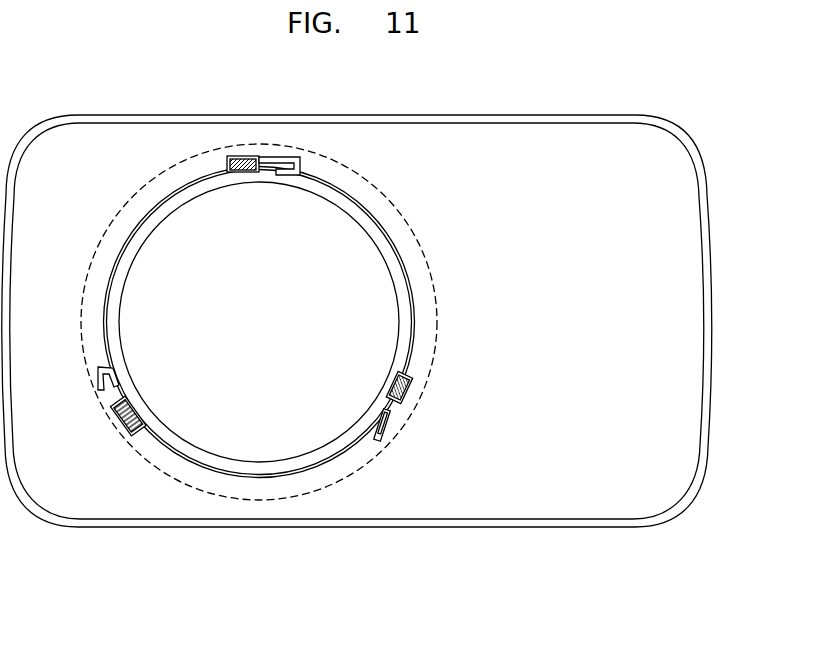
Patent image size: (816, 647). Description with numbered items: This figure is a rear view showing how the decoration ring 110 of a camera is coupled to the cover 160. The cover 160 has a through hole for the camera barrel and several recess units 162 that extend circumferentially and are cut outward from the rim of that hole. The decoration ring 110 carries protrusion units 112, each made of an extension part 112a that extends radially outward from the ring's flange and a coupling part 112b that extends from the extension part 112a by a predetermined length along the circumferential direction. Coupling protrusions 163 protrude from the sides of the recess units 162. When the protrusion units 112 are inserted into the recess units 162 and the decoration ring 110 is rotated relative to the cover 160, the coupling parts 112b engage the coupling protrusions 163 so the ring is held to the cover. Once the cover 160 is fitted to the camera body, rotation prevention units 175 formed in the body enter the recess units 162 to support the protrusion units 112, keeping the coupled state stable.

The cover 160 is at (673, 118).
The decoration ring 110 is at (157, 470).
The protrusion units 112 is at (515, 578).
The extension part 112a is at (395, 423).
The coupling part 112b is at (379, 435).
The recess units 162 is at (405, 380).
The rotation prevention units 175 is at (406, 388).
The coupling protrusions 163 is at (378, 438).